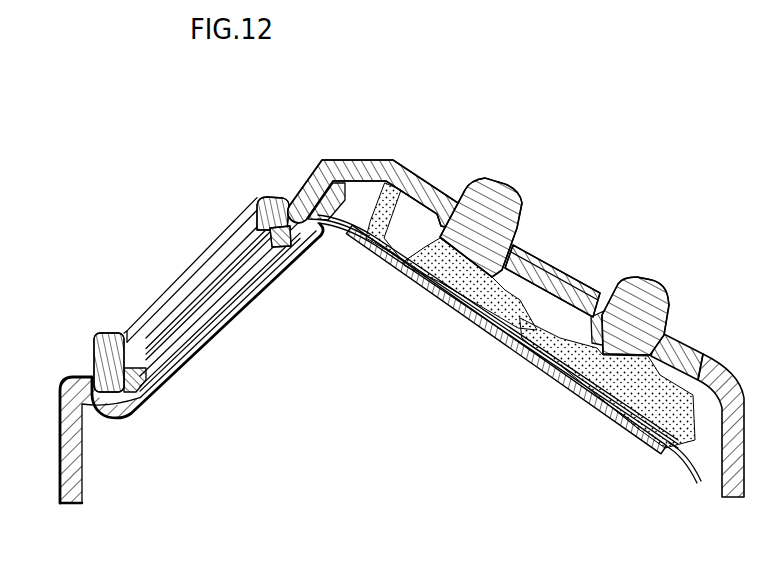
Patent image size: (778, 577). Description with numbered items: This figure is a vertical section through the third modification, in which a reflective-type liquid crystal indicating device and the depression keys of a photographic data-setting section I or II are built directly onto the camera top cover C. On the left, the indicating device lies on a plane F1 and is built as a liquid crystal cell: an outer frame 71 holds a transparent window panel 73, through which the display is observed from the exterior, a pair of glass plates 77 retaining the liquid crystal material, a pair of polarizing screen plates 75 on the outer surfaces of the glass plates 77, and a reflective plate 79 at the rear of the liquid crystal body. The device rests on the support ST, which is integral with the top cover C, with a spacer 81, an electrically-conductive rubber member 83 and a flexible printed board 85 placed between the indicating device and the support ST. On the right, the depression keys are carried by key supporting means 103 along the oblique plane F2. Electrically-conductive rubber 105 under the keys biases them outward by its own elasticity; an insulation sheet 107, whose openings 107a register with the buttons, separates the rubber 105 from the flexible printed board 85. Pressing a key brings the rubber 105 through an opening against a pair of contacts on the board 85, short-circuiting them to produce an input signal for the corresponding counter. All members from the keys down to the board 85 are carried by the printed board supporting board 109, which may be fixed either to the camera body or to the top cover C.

The outer frame 71 is at (90, 377).
The window panel 73 is at (145, 330).
The polarizing screen plates 75 is at (198, 288).
The glass plates 77 is at (172, 320).
The reflective plate 79 is at (262, 281).
The spacer 81 is at (108, 333).
The electrically-conductive rubber member 83 is at (286, 238).
The flexible printed board 85 is at (678, 462).
The key supporting means 103 is at (505, 325).
The electrically-conductive rubber 105 is at (654, 289).
The insulation sheet 107 is at (545, 330).
The adhesive fillet 107a is at (603, 330).
The printed board supporting board 109 is at (633, 433).
The support ST is at (240, 290).
The first connector F1 is at (300, 186).
The oblique plane F2 is at (430, 187).
The top cover C is at (353, 161).
The photographic data-setting section I or II is at (532, 254).